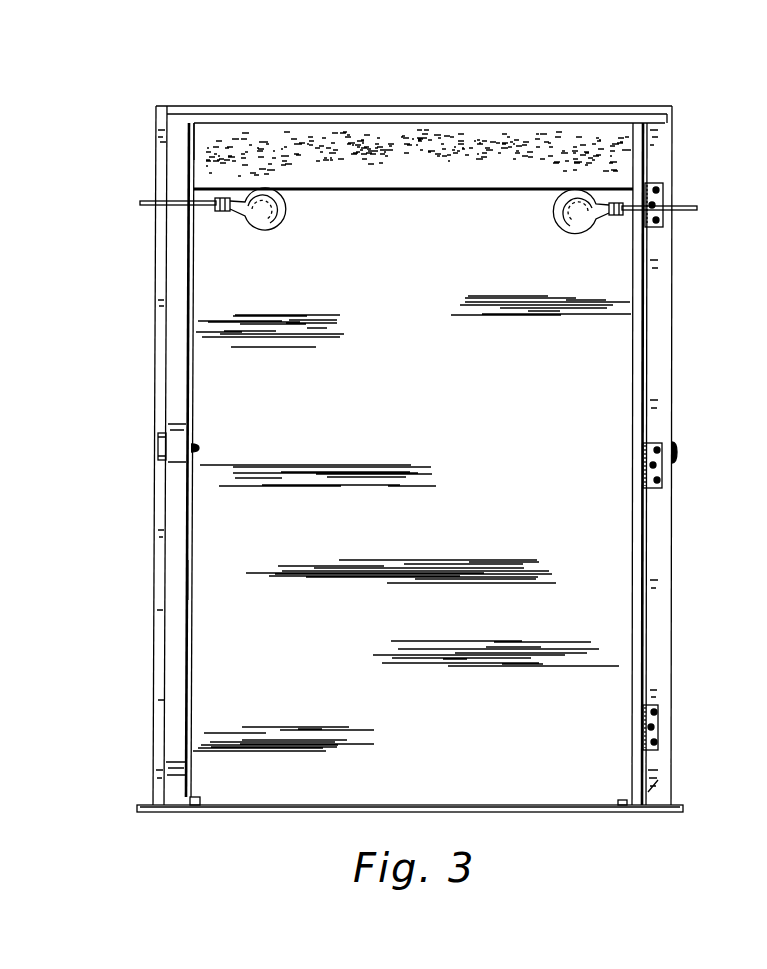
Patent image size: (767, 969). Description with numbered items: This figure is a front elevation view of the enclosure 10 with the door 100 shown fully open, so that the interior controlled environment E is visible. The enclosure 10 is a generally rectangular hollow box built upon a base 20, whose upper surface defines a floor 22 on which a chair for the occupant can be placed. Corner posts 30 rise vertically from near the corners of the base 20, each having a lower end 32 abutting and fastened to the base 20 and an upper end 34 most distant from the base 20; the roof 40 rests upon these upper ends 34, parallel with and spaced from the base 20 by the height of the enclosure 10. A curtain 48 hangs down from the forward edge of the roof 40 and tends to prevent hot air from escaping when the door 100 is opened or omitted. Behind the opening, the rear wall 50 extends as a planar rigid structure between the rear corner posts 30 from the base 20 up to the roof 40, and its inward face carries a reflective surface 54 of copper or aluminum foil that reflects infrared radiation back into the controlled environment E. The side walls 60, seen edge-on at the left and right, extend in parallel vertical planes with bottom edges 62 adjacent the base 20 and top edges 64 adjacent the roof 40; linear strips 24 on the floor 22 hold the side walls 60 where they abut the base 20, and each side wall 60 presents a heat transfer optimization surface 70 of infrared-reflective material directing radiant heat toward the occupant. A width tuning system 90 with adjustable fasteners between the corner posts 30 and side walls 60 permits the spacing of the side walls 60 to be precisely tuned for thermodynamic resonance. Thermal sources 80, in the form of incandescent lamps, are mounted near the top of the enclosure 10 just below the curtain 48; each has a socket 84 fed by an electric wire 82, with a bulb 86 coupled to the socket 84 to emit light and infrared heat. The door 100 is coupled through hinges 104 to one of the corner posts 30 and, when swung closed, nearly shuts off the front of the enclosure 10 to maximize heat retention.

The enclosure 10 is at (554, 84).
The base 20 is at (553, 813).
The floor 22 is at (282, 805).
The linear strips 24 is at (197, 797).
The corner posts 30 is at (178, 547).
The lower end 32 is at (657, 797).
The upper ends 34 is at (658, 152).
The roof 40 is at (462, 117).
The curtain 48 is at (418, 183).
The rear wall 50 is at (218, 315).
The reflective surface 54 is at (413, 385).
The side walls 60 is at (193, 502).
The bottom edges 62 is at (192, 780).
The top edges 64 is at (196, 152).
The heat transfer optimization surface 70 is at (193, 413).
The thermal source 80 is at (279, 250).
The electric wire 82 is at (146, 200).
The socket 84 is at (219, 209).
The bulb 86 is at (278, 207).
The width tuning system 90 is at (138, 448).
The door 100 is at (637, 430).
The hinges 104 is at (658, 470).
The controlled environment E is at (412, 531).